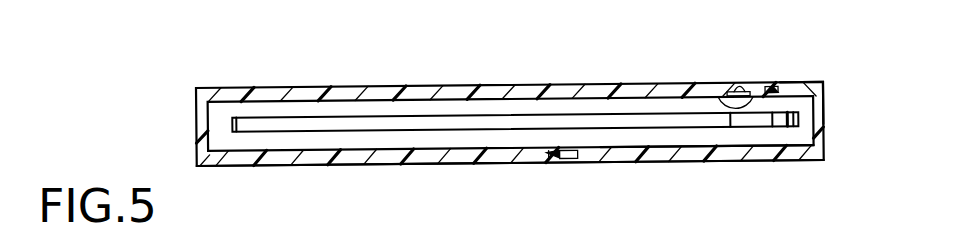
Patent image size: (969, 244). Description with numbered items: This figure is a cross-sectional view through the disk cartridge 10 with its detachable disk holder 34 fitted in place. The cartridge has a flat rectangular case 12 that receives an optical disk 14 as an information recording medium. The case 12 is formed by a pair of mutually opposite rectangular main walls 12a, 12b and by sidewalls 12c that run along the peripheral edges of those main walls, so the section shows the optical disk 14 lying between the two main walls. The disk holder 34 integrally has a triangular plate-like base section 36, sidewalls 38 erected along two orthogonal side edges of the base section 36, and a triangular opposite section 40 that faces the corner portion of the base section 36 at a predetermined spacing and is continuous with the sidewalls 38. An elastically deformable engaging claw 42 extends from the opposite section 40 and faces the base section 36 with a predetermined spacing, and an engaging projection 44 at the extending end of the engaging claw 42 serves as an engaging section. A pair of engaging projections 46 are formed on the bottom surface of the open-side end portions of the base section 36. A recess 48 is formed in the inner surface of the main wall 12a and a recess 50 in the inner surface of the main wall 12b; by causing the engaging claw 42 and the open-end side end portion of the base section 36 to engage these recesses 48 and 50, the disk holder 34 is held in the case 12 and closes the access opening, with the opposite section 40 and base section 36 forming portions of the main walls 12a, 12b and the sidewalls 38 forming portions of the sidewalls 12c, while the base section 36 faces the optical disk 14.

The disk cartridge 10 is at (367, 79).
The case 12 is at (428, 78).
The main wall 12a is at (468, 83).
The main wall 12b is at (453, 155).
The sidewalls 12c is at (194, 106).
The optical disk 14 is at (374, 122).
The disk holder 34 is at (786, 166).
The base section 36 is at (692, 152).
The sidewalls 38 is at (825, 106).
The opposite section 40 is at (806, 81).
The engaging claw 42 is at (770, 88).
The engaging projection 44 is at (738, 86).
The engaging projections 46 is at (563, 163).
The recess 48 is at (718, 92).
The recess 50 is at (548, 158).